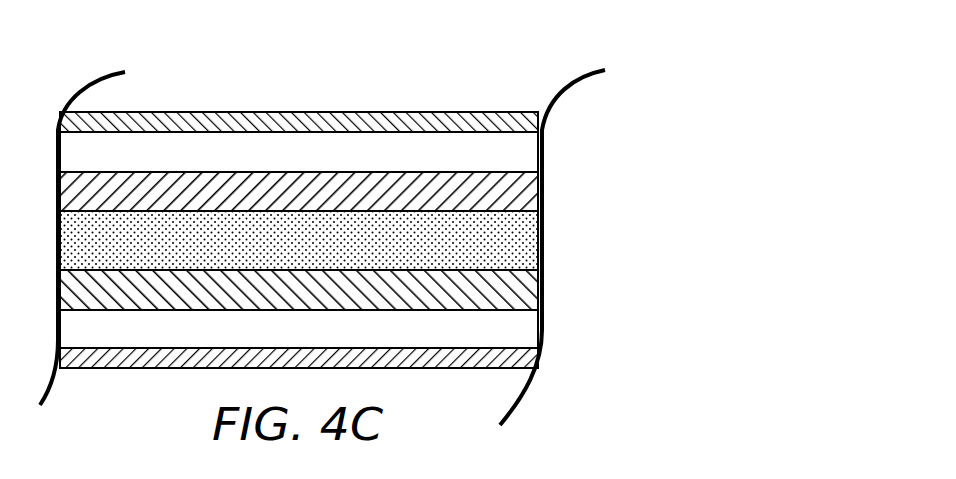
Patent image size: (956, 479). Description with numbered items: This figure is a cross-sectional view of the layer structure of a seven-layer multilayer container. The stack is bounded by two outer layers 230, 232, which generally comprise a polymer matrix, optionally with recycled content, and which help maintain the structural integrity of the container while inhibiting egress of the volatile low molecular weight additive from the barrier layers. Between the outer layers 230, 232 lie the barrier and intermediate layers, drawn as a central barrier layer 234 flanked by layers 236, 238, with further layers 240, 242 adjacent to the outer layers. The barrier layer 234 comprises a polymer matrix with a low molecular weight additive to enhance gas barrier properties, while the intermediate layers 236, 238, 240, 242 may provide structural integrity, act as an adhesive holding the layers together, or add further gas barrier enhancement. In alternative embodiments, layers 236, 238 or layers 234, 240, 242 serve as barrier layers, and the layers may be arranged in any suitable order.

The outer layer 230 is at (500, 113).
The intermediate layer 240 is at (488, 150).
The intermediate layer 236 is at (495, 191).
The barrier layer 234 is at (475, 228).
The intermediate layer 238 is at (488, 288).
The intermediate layer 242 is at (488, 327).
The outer layer 232 is at (500, 366).